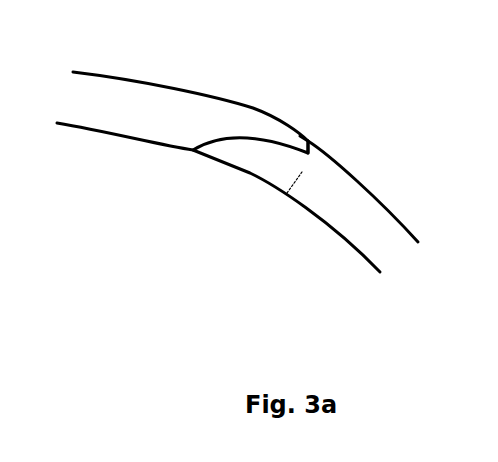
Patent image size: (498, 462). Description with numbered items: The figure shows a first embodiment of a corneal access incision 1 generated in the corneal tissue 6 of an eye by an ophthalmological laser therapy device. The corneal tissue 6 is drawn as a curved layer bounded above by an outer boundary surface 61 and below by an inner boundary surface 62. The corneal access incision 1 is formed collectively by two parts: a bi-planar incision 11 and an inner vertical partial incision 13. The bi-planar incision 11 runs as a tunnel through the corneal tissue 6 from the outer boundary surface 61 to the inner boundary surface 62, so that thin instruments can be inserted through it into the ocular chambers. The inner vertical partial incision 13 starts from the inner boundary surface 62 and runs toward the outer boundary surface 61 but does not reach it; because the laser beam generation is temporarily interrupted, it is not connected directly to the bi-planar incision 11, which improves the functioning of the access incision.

The corneal tissue 6 is at (264, 164).
The outer boundary surface 61 is at (259, 95).
The inner boundary surface 62 is at (168, 158).
The corneal access incision 1 is at (324, 136).
The bi-planar incision 11 is at (238, 151).
The inner vertical partial incision 13 is at (285, 206).